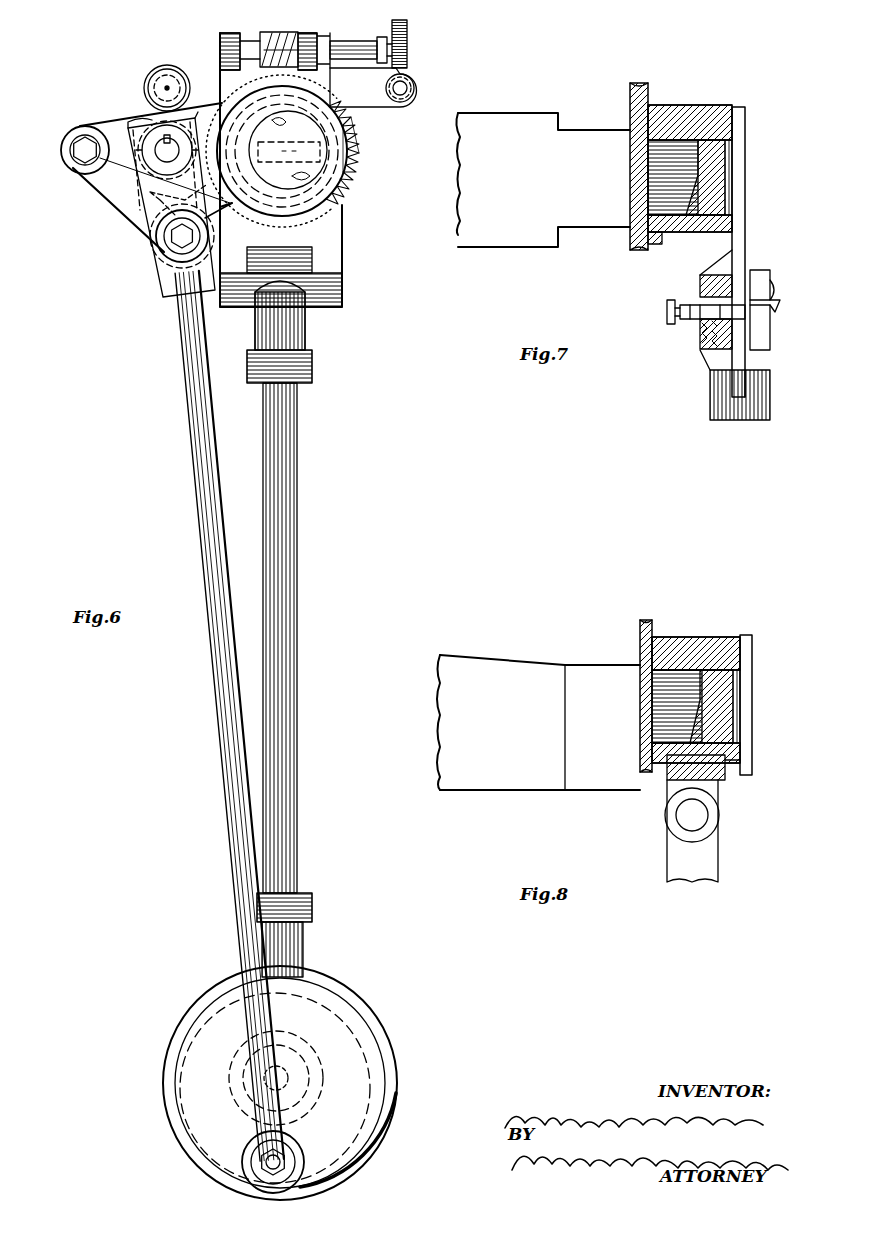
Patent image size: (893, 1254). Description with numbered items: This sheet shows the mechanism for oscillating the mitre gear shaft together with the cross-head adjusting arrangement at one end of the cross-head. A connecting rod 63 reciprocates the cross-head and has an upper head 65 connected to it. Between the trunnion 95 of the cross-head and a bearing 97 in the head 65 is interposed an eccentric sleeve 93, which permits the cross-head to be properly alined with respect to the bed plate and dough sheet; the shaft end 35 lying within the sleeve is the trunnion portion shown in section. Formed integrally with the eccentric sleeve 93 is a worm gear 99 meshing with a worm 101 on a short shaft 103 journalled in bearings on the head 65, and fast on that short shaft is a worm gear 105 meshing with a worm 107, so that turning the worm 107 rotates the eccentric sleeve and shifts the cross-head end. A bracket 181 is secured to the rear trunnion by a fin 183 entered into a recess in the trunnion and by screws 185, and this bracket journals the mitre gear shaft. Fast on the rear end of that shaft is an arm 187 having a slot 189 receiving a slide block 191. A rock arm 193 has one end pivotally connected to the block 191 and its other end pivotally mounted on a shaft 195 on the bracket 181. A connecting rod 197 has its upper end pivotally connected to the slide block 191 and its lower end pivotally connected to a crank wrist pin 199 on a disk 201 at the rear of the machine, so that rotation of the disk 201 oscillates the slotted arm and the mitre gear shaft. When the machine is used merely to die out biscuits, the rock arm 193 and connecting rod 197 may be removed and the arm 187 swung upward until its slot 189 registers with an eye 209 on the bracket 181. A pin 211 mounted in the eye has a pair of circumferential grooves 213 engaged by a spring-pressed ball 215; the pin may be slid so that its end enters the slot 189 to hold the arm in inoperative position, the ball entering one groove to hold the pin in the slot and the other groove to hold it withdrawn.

In FIG. 7, the shaft 35 is at (496, 243).
In FIG. 8, the shaft 35 is at (487, 673).
In FIG. 6, the connecting rod 63 is at (296, 455).
In FIG. 6, the connecting rod head 65 is at (335, 262).
In FIG. 8, the connecting rod head 65 is at (715, 790).
In FIG. 6, the eccentric sleeve 93 is at (328, 212).
In FIG. 7, the eccentric sleeve 93 is at (718, 105).
In FIG. 8, the eccentric sleeve 93 is at (716, 640).
In FIG. 6, the trunnion 95 is at (345, 196).
In FIG. 7, the trunnion 95 is at (672, 105).
In FIG. 8, the trunnion 95 is at (667, 678).
In FIG. 7, the bearing 97 is at (672, 232).
In FIG. 8, the bearing 97 is at (746, 640).
In FIG. 6, the worm gear 99 is at (333, 227).
In FIG. 7, the worm gear 99 is at (628, 95).
In FIG. 8, the worm gear 99 is at (645, 620).
In FIG. 6, the worm 101 is at (266, 33).
In FIG. 6, the short shaft 103 is at (368, 55).
In FIG. 6, the worm gear 105 is at (404, 32).
In FIG. 6, the worm 107 is at (415, 88).
In FIG. 6, the bracket 181 is at (124, 124).
In FIG. 7, the bracket 181 is at (745, 233).
In FIG. 8, the bracket 181 is at (750, 781).
In FIG. 6, the fin 183 is at (362, 140).
In FIG. 7, the fin 183 is at (727, 200).
In FIG. 8, the fin 183 is at (748, 708).
In FIG. 6, the screw 185 is at (354, 118).
In FIG. 7, the screw 185 is at (731, 165).
In FIG. 8, the screw 185 is at (748, 667).
In FIG. 6, the arm 187 is at (152, 277).
In FIG. 6, the slot 189 is at (168, 283).
In FIG. 6, the slide block 191 is at (126, 230).
In FIG. 6, the rock arm 193 is at (108, 207).
In FIG. 6, the shaft 195 is at (70, 150).
In FIG. 6, the connecting rod 197 is at (188, 413).
In FIG. 6, the crank wrist pin 199 is at (280, 1160).
In FIG. 6, the disk 201 is at (360, 1108).
In FIG. 6, the eye 209 is at (145, 88).
In FIG. 6, the pin 211 is at (166, 75).
In FIG. 7, the pin 211 is at (668, 308).
In FIG. 7, the circumferential groove 213 is at (700, 280).
In FIG. 7, the spring-pressed ball 215 is at (700, 325).